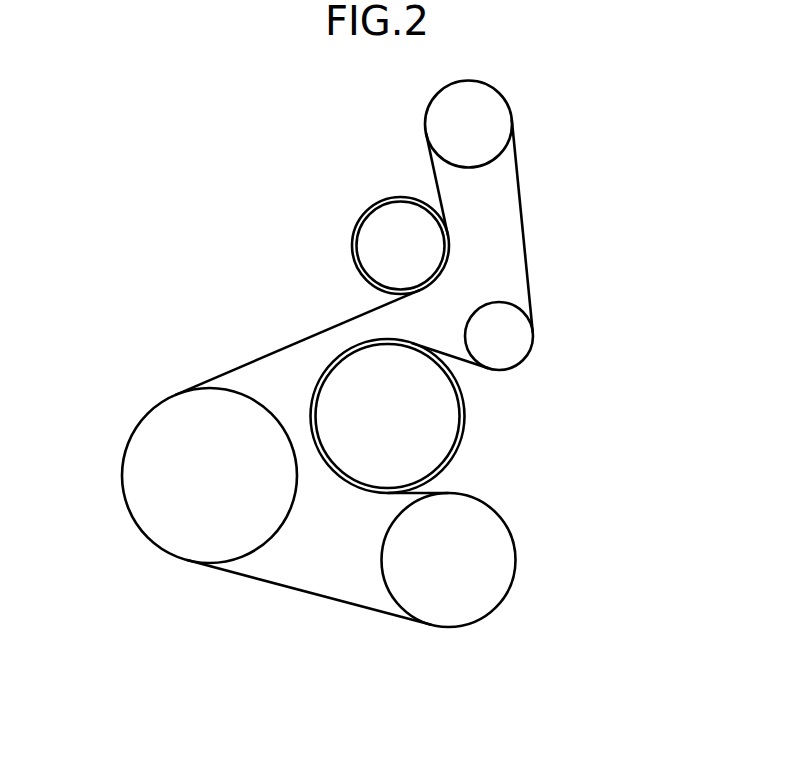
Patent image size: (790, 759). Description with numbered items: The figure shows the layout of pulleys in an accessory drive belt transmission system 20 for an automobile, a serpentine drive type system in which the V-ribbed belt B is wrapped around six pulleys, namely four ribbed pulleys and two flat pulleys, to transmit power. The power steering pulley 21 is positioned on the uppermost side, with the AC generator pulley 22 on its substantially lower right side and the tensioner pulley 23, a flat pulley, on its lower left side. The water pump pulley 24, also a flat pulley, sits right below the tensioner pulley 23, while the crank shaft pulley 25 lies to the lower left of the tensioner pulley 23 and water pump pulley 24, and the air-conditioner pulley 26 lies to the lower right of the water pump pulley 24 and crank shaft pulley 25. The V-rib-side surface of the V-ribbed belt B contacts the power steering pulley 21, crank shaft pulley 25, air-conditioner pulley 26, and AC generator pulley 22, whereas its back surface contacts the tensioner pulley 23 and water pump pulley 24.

The accessory drive belt transmission system 20 is at (250, 158).
The V-ribbed belt B is at (298, 342).
The power steering pulley 21 is at (487, 108).
The AC generator pulley 22 is at (507, 342).
The tensioner pulley 23 is at (382, 235).
The water pump pulley 24 is at (438, 427).
The crank shaft pulley 25 is at (160, 513).
The air-conditioner pulley 26 is at (492, 542).